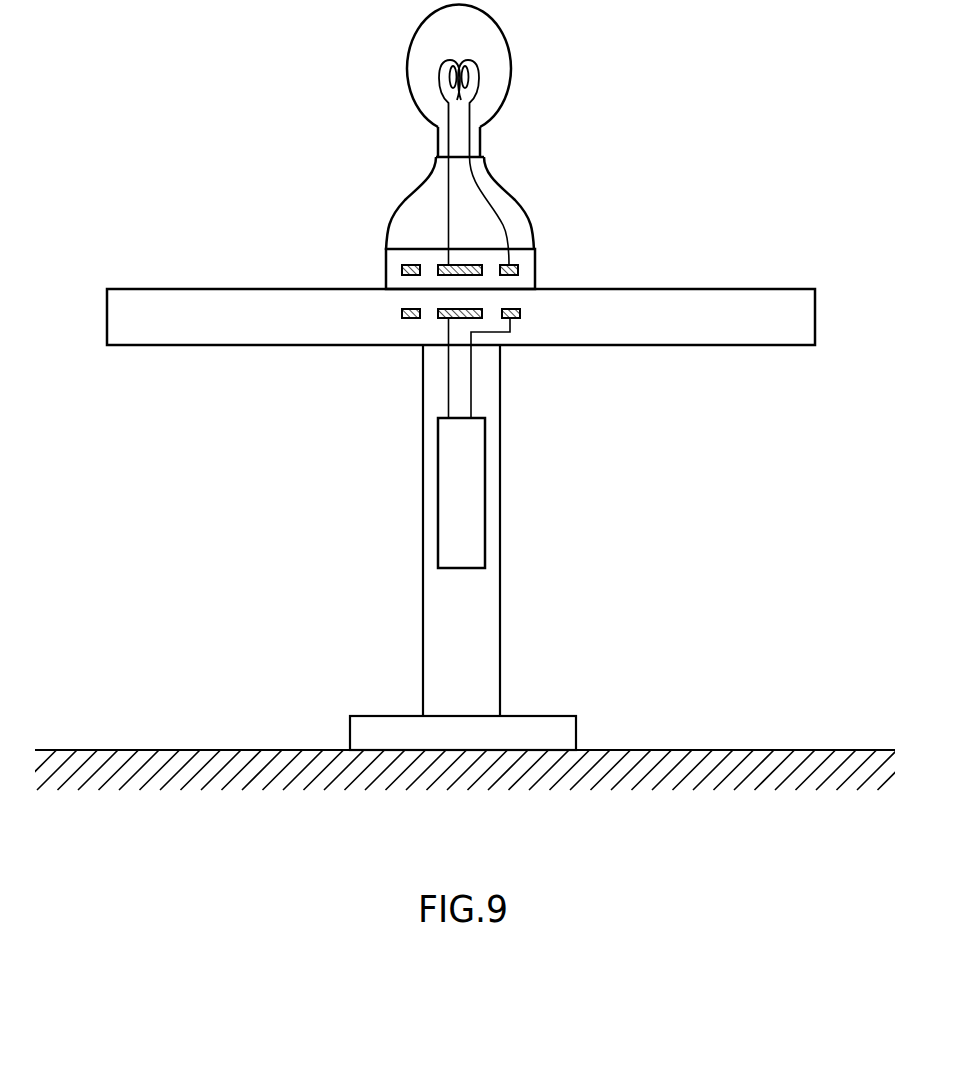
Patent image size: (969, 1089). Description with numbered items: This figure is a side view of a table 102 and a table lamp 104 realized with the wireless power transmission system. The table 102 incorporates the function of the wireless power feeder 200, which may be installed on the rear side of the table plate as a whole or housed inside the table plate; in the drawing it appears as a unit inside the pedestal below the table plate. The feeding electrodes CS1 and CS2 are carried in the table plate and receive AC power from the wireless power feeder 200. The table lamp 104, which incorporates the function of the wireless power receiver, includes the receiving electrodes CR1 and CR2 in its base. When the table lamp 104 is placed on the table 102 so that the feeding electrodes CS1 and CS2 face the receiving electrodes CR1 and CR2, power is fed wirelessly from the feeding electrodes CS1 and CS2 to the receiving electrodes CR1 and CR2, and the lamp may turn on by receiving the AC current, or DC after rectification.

The table lamp 104 is at (505, 195).
The table 102 is at (815, 318).
The wireless power feeder 200 is at (485, 495).
The receiving electrode CR1 is at (402, 269).
The receiving electrode CR2 is at (445, 263).
The feeding electrode CS1 is at (412, 318).
The feeding electrode CS2 is at (440, 320).